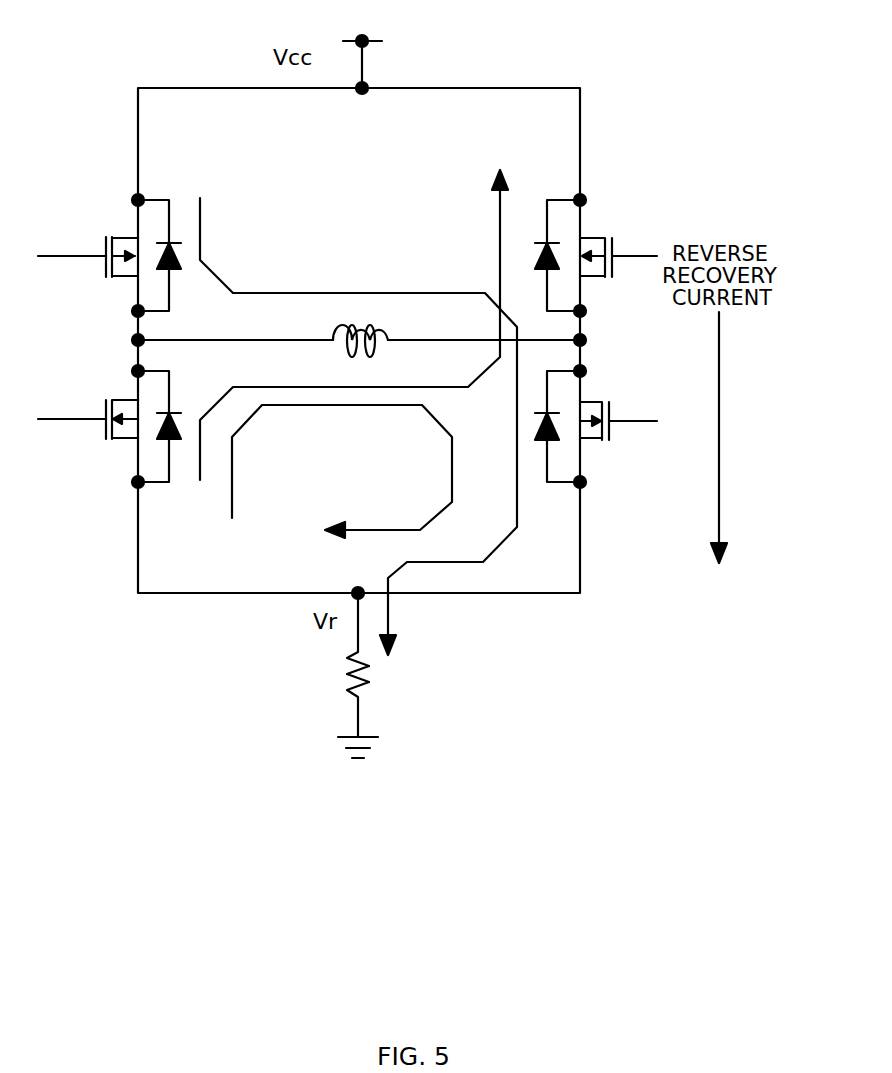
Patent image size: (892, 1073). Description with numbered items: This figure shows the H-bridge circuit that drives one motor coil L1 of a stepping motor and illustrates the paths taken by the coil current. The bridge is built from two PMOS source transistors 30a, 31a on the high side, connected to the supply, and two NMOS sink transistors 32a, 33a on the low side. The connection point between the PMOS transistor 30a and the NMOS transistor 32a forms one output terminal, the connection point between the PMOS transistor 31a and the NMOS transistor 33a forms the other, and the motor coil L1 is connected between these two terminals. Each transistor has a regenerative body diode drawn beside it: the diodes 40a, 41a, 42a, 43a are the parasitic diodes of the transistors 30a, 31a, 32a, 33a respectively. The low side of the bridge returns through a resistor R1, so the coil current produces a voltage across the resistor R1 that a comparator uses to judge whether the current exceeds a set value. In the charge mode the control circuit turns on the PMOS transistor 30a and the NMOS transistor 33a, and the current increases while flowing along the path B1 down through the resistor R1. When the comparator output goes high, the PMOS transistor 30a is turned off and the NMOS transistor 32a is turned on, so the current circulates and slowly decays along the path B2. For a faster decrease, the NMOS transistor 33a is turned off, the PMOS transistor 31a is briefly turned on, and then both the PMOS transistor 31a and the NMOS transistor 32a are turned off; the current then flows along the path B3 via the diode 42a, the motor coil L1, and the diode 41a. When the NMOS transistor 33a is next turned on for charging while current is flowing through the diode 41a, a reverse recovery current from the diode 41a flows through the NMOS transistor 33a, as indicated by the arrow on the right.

The PMOS transistor 30a is at (112, 277).
The PMOS transistor 31a is at (603, 278).
The NMOS transistor 32a is at (110, 439).
The NMOS transistor 33a is at (602, 442).
The diode 40a is at (158, 243).
The diode 41a is at (548, 243).
The diode 42a is at (156, 412).
The diode 43a is at (549, 412).
The motor coil L1 is at (392, 330).
The resistor R1 is at (350, 687).
The path B1 is at (353, 412).
The path B2 is at (333, 477).
The path B3 is at (347, 342).